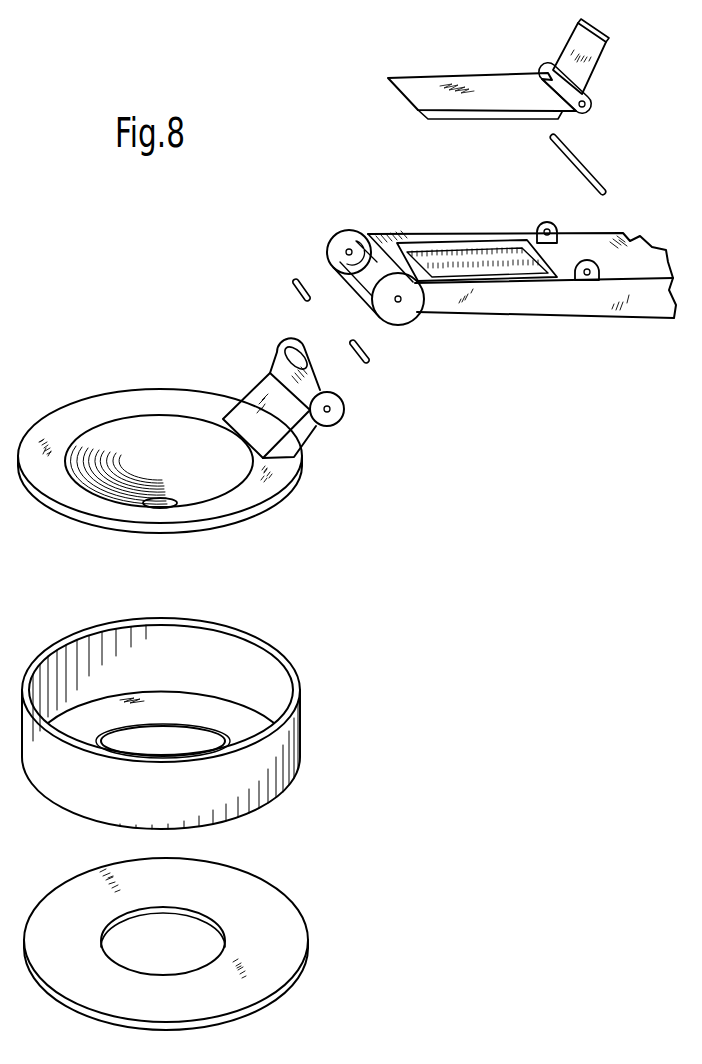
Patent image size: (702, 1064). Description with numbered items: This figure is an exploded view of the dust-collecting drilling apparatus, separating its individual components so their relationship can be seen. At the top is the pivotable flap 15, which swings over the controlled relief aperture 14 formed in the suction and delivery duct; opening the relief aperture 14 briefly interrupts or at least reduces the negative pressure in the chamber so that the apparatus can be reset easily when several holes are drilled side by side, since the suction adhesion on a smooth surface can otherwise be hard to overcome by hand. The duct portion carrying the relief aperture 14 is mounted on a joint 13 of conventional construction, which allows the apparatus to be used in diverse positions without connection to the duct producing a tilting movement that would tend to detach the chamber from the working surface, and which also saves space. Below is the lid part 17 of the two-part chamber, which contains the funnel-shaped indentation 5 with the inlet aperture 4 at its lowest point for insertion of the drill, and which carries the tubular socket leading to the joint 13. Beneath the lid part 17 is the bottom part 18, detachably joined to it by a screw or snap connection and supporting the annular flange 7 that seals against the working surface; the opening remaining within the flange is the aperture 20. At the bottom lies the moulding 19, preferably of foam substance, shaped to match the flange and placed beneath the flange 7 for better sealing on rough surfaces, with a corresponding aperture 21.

The inlet aperture 4 is at (156, 501).
The funnel-shaped indentation 5 is at (150, 420).
The annular flange 7 is at (263, 722).
The joint 13 is at (401, 302).
The relief aperture 14 is at (463, 255).
The pivotable flap 15 is at (590, 36).
The lid part 17 is at (283, 505).
The bottom part 18 is at (285, 759).
The moulding 19 is at (290, 925).
The aperture 20 is at (168, 737).
The aperture 21 is at (200, 912).